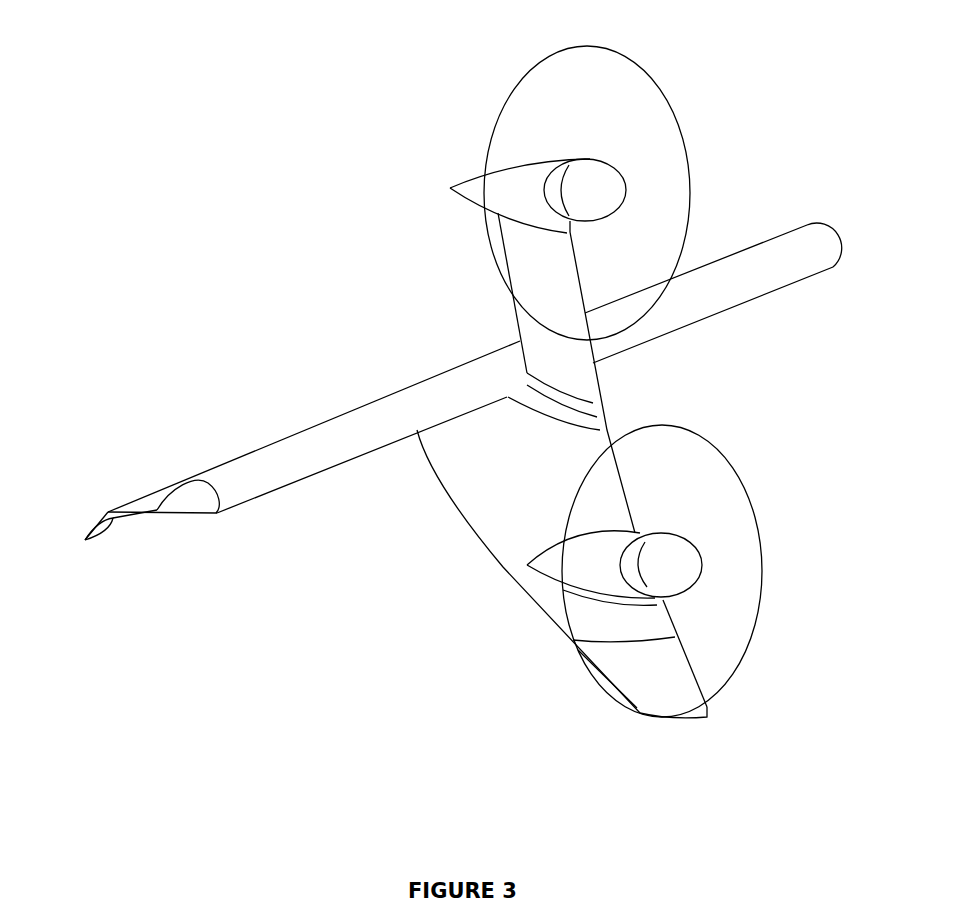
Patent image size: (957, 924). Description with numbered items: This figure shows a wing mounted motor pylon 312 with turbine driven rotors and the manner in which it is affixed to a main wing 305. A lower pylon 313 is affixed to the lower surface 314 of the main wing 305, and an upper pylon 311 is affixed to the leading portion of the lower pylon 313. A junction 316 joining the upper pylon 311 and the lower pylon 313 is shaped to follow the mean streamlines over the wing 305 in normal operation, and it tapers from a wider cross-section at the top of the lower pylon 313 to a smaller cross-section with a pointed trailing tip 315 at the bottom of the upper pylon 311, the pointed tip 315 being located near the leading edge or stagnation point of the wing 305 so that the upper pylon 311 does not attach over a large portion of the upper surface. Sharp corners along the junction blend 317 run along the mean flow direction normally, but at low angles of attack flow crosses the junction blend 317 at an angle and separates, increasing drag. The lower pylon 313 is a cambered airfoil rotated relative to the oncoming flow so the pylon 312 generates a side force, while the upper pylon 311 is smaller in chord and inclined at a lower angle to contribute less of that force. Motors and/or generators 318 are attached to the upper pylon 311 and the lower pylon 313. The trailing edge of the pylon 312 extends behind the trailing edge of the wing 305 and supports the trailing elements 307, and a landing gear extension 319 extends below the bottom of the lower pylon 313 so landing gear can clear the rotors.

The main wing 305 is at (270, 473).
The trailing elements 307 is at (80, 540).
The upper pylon 311 is at (533, 288).
The motor pylon 312 is at (630, 43).
The lower pylon 313 is at (510, 527).
The lower surface 314 is at (483, 407).
The pointed trailing tip 315 is at (513, 382).
The junction 316 is at (588, 408).
The junction blend 317 is at (507, 393).
The motors and/or generators 318 is at (608, 180).
The landing gear extension 319 is at (638, 687).